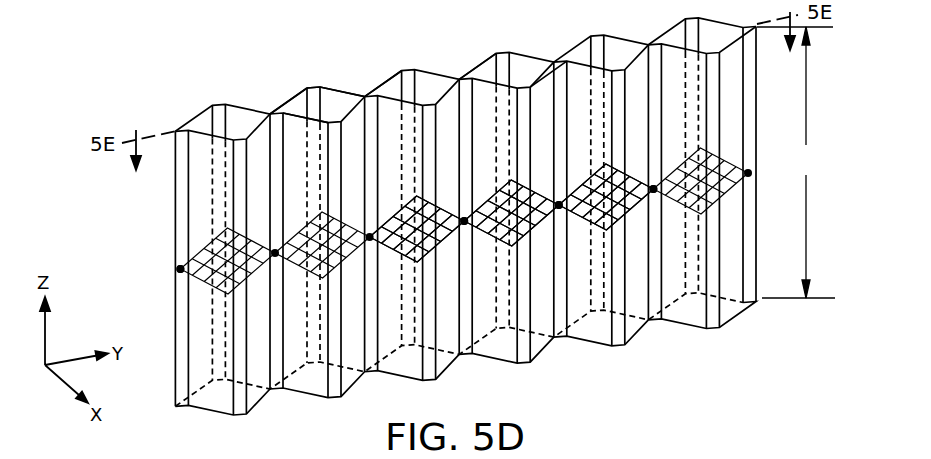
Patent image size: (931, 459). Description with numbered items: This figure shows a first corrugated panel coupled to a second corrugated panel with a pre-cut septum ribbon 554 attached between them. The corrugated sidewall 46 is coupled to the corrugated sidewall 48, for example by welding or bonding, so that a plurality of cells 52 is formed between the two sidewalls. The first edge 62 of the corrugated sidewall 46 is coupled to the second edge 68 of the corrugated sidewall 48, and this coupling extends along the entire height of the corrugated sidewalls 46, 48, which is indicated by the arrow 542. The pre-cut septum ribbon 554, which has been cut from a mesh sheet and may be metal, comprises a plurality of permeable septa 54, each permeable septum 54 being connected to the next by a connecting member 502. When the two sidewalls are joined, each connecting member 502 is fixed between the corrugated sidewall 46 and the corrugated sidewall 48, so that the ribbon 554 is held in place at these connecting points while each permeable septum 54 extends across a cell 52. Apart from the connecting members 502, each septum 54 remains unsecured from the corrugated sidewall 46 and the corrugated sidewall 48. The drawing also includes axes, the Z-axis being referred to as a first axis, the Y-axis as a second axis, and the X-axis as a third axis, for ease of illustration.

The corrugated sidewall 46 is at (483, 65).
The corrugated sidewall 48 is at (537, 82).
The cell 52 is at (392, 75).
The permeable septum 54 is at (416, 245).
The first edge 62 is at (270, 113).
The second edge 68 is at (271, 116).
The connecting member 502 is at (466, 225).
The arrow indicating height 542 is at (796, 162).
The pre-cut septum ribbon 554 is at (188, 282).